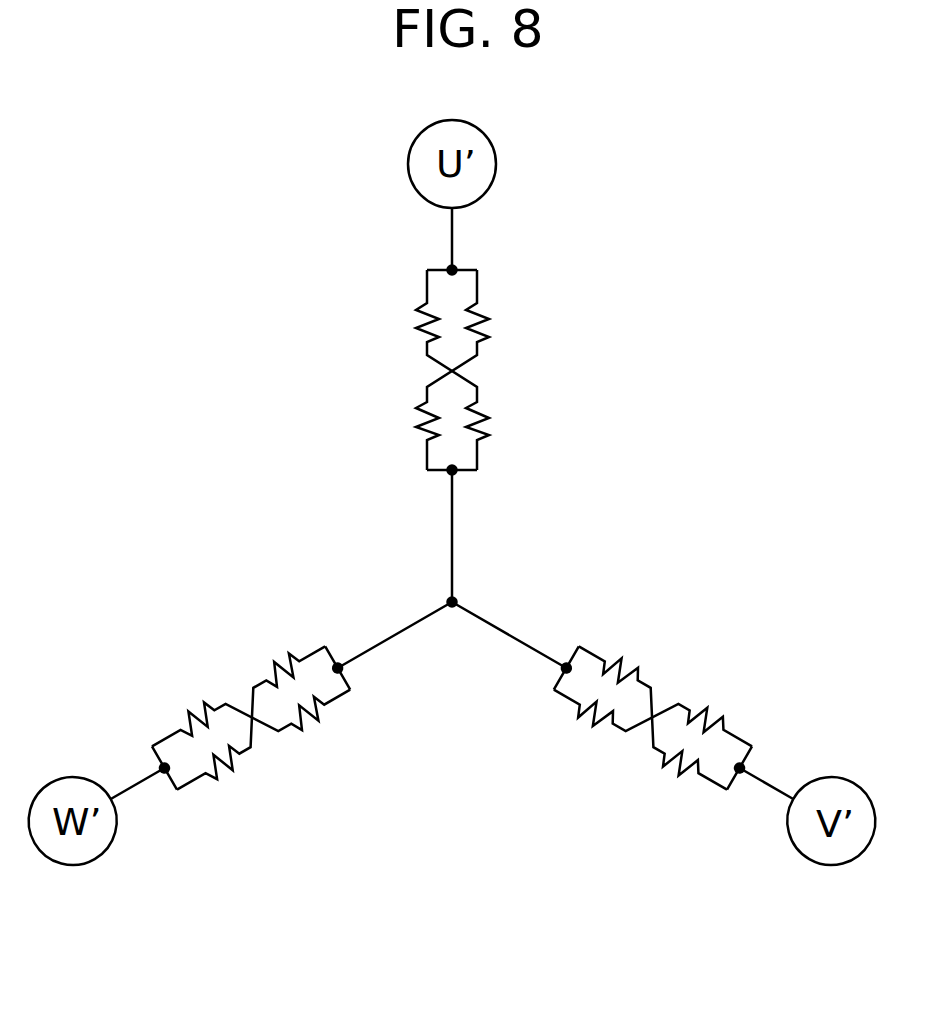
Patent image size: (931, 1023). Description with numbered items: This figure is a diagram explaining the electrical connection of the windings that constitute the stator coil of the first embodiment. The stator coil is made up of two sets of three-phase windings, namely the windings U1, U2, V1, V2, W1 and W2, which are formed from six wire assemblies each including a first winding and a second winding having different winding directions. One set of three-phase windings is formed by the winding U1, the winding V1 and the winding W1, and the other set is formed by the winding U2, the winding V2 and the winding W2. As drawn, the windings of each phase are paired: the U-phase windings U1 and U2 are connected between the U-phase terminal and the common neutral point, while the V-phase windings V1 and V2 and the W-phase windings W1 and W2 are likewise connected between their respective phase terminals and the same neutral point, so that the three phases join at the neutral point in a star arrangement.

The winding U1 is at (498, 370).
The winding U2 is at (405, 370).
The winding V1 is at (653, 736).
The winding V2 is at (653, 709).
The winding W1 is at (251, 708).
The winding W2 is at (251, 736).